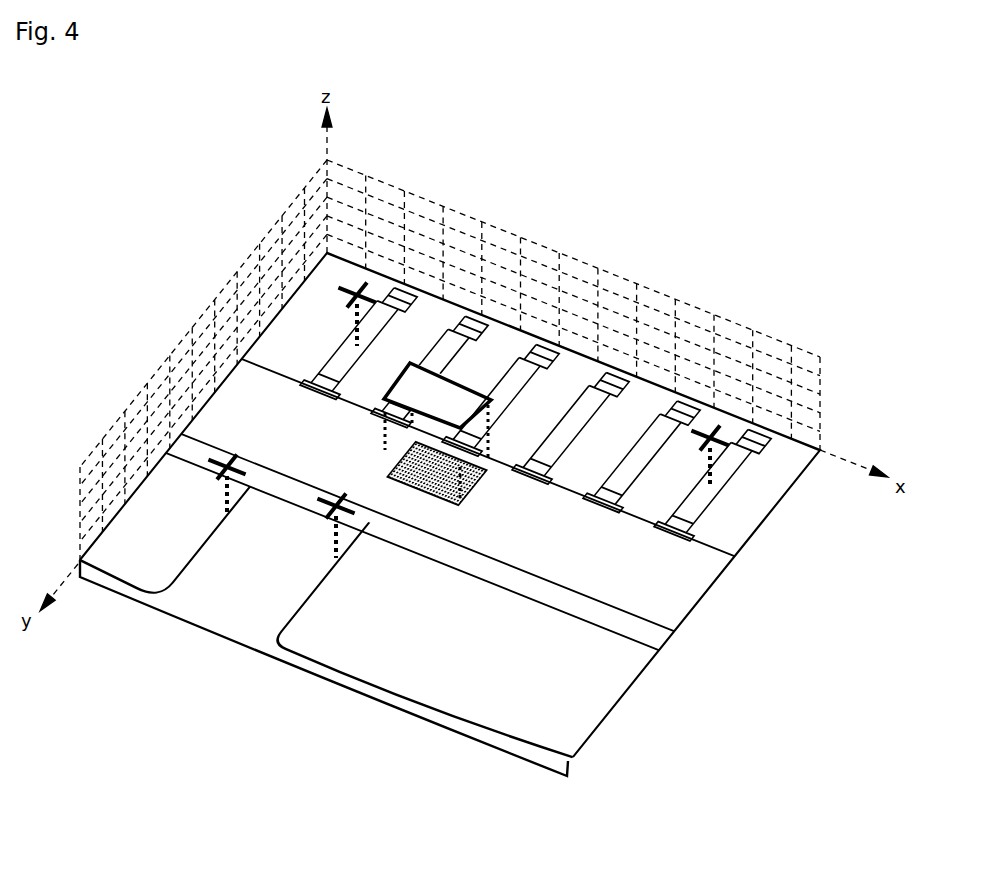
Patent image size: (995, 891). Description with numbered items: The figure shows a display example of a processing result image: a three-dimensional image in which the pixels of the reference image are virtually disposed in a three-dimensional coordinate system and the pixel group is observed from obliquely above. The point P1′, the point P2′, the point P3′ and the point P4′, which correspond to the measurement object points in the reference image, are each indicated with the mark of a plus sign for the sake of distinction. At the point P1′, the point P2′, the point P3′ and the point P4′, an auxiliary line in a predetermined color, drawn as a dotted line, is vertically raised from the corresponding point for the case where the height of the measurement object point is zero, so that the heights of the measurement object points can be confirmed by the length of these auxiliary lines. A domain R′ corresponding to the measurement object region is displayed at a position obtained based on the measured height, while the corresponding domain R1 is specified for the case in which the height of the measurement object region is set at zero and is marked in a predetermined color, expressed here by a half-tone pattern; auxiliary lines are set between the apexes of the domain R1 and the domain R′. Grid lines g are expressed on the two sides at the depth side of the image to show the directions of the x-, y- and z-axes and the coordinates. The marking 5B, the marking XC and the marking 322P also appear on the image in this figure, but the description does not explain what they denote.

The measurement point P1' P1′ is at (356, 292).
The measurement point P2' P2′ is at (709, 436).
The measurement point P3' P3′ is at (224, 466).
The measurement point P4' P4′ is at (333, 506).
The region R' R′ is at (453, 331).
The region R1 is at (515, 599).
The marker 5B is at (437, 429).
The marker XC is at (358, 440).
The pattern portion 322P is at (478, 488).
The grid g is at (224, 286).